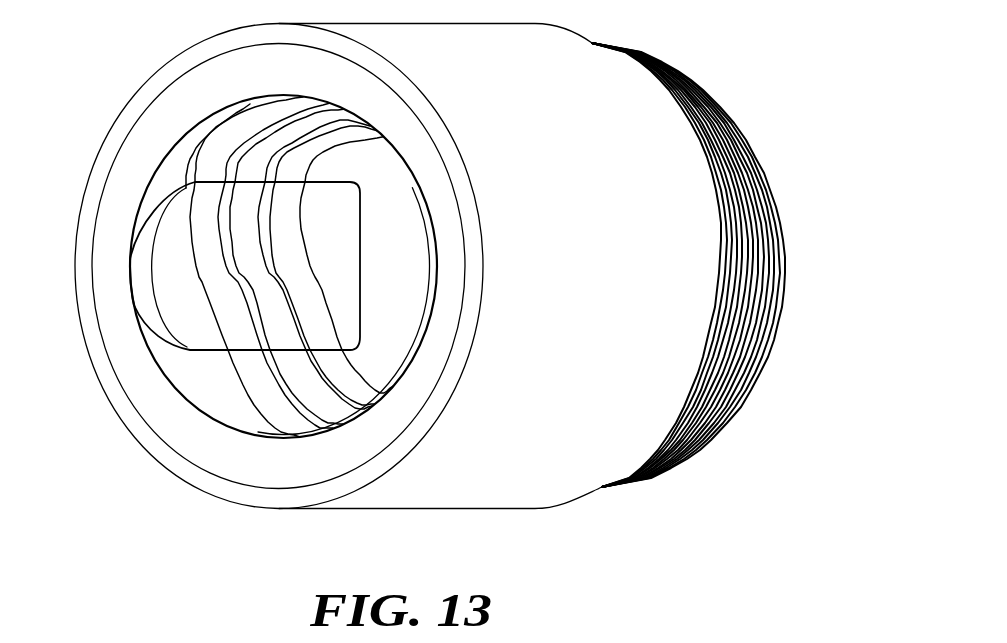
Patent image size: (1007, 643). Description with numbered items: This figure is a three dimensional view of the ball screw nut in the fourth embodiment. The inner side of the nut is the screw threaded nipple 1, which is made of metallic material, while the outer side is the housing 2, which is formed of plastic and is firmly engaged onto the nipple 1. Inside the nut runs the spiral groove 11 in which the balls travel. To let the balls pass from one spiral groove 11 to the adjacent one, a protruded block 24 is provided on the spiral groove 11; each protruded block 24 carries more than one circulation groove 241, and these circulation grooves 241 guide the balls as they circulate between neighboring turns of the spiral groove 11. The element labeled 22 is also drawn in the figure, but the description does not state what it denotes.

The screw threaded nipple 1 is at (122, 352).
The housing 2 is at (143, 432).
The spiral groove 11 is at (252, 373).
The external thread 22 is at (707, 435).
The protruded block 24 is at (178, 220).
The circulation groove 241 is at (213, 195).